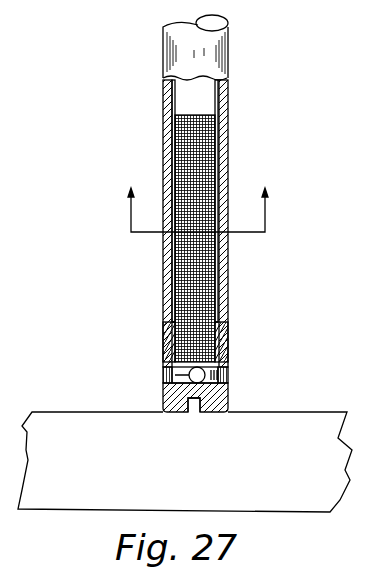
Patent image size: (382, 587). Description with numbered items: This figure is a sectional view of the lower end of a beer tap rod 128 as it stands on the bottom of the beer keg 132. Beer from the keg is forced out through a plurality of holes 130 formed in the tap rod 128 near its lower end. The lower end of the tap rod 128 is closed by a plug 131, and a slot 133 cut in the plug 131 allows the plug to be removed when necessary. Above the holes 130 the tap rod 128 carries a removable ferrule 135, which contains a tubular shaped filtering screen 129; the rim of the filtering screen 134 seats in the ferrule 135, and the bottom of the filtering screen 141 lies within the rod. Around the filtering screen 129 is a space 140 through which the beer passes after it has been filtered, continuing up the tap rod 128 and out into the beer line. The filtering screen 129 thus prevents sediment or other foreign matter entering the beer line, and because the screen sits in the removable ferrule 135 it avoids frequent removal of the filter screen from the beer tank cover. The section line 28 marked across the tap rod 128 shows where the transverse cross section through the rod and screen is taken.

The tap rod 128 is at (230, 63).
The bottom of filtering screen 141 is at (205, 115).
The filtering screen 129 is at (215, 142).
The space surrounding filtering screen 140 is at (216, 292).
The removable ferrule 135 is at (166, 350).
The rim of filtering screen 134 is at (216, 368).
The holes 130 is at (165, 372).
The plug 131 is at (212, 412).
The slot 133 is at (192, 408).
The bottom of beer keg 132 is at (100, 412).
The section line 28 is at (193, 201).